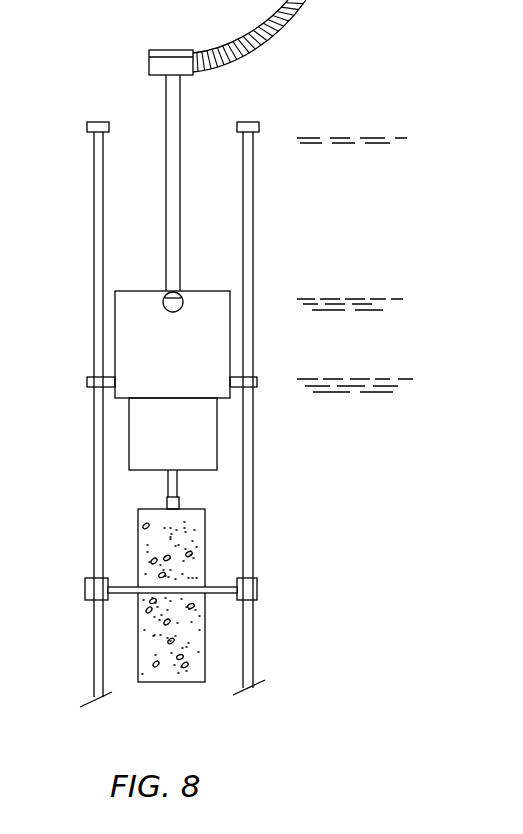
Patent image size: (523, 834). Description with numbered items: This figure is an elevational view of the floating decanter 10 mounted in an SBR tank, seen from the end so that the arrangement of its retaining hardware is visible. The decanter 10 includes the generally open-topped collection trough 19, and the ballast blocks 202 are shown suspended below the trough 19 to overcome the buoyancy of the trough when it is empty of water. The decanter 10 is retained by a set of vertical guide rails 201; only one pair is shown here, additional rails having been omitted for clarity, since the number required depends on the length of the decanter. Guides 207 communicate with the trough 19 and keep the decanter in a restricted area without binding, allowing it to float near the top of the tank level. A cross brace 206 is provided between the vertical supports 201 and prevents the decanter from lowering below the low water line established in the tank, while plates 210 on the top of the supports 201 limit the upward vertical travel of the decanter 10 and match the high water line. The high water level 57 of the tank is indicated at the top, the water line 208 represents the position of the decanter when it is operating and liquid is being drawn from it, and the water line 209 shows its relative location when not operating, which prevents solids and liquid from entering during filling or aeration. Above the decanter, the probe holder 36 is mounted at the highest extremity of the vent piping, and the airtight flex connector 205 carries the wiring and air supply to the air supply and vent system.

The probe holder 36 is at (149, 73).
The airtight flex connector 205 is at (240, 63).
The plates 210 is at (247, 122).
The high water level 57 is at (378, 137).
The water line 208 is at (368, 298).
The water line 209 is at (360, 378).
The guides 207 is at (87, 382).
The decanter 10 is at (188, 350).
The collection trough 19 is at (186, 447).
The guide rails 201 is at (94, 508).
The ballast blocks 202 is at (207, 553).
The cross bar clamp 206 is at (258, 591).